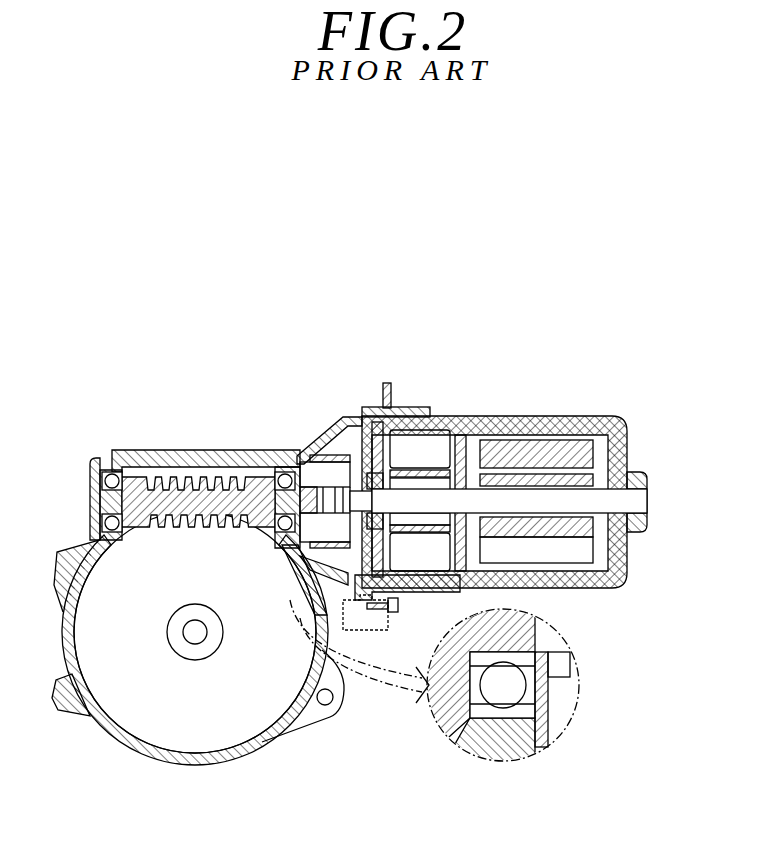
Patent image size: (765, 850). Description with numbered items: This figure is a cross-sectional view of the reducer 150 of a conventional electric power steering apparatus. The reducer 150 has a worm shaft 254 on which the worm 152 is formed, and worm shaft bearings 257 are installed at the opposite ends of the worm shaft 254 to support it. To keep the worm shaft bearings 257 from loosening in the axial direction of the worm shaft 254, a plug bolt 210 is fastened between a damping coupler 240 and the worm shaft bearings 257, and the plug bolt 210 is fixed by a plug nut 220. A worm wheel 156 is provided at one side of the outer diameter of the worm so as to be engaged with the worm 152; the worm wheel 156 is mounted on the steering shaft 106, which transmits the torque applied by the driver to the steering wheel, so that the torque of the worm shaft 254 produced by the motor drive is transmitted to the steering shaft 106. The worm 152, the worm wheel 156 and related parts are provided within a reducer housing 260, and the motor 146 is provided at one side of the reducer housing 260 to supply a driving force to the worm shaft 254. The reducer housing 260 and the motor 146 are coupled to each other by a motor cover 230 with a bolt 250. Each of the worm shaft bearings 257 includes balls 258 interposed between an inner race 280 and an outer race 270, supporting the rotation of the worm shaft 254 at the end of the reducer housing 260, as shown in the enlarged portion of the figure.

The reducer 150 is at (498, 453).
The motor cover 230 is at (396, 408).
The motor 146 is at (497, 416).
The plug nut 220 is at (328, 430).
The plug bolt 210 is at (306, 452).
The worm shaft bearings 257 is at (108, 472).
The worm 152 is at (155, 475).
The reducer housing 260 is at (192, 452).
The worm shaft 254 is at (98, 508).
The bolt 250 is at (398, 608).
The damping coupler 240 is at (360, 590).
The steering shaft 106 is at (196, 636).
The worm wheel 156 is at (247, 722).
The inner race 280 is at (528, 660).
The balls 258 is at (517, 690).
The outer race 270 is at (530, 715).